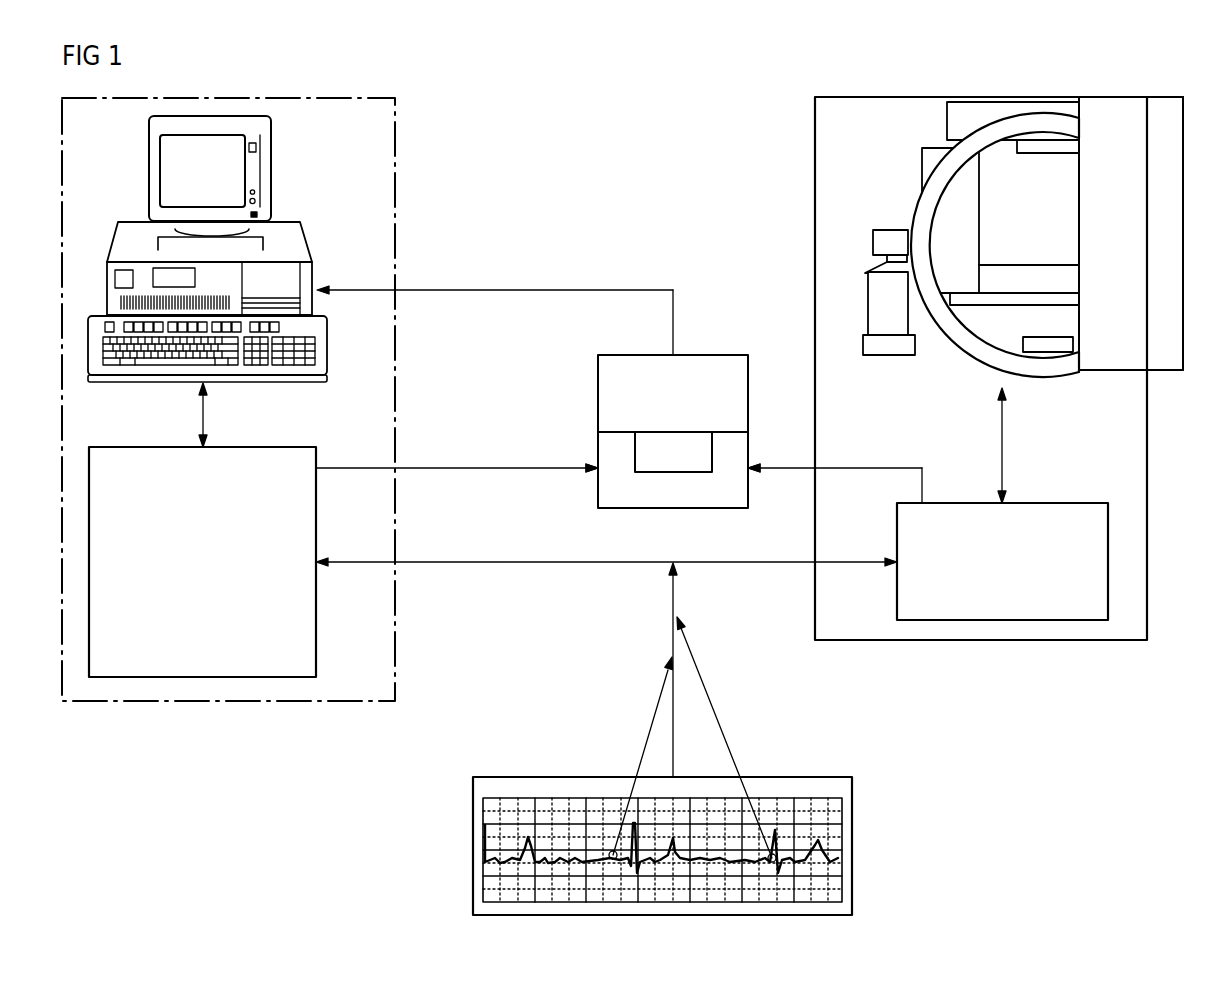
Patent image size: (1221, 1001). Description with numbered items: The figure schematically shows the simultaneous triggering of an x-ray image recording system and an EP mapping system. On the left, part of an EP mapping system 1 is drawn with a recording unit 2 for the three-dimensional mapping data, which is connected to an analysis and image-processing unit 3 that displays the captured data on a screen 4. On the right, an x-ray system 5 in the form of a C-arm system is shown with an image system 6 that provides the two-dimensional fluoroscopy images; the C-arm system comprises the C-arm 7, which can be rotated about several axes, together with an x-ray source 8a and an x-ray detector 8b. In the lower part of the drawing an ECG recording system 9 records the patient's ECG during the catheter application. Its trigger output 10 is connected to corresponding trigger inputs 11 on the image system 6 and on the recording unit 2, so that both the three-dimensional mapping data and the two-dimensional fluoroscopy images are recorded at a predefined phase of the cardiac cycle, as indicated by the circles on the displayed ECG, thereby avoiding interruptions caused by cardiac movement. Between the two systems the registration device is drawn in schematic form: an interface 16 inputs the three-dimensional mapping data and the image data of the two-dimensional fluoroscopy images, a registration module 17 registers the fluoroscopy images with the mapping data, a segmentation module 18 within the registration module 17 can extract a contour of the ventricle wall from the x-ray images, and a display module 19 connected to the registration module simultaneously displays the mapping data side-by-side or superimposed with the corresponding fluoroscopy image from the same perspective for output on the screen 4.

The EP mapping system 1 is at (237, 701).
The recording unit 2 is at (316, 632).
The analysis and image-processing unit 3 is at (312, 247).
The screen 4 is at (271, 172).
The x-ray system 5 is at (980, 642).
The image system 6 is at (1065, 503).
The C-arm 7 is at (922, 217).
The x-ray source 8a is at (1047, 153).
The x-ray detector 8b is at (1047, 333).
The ECG recording system 9 is at (852, 847).
The trigger output 10 is at (677, 565).
The trigger inputs 11 is at (318, 559).
The interface 16 is at (595, 464).
The registration module 17 is at (607, 493).
The segmentation module 18 is at (685, 463).
The display module 19 is at (607, 393).